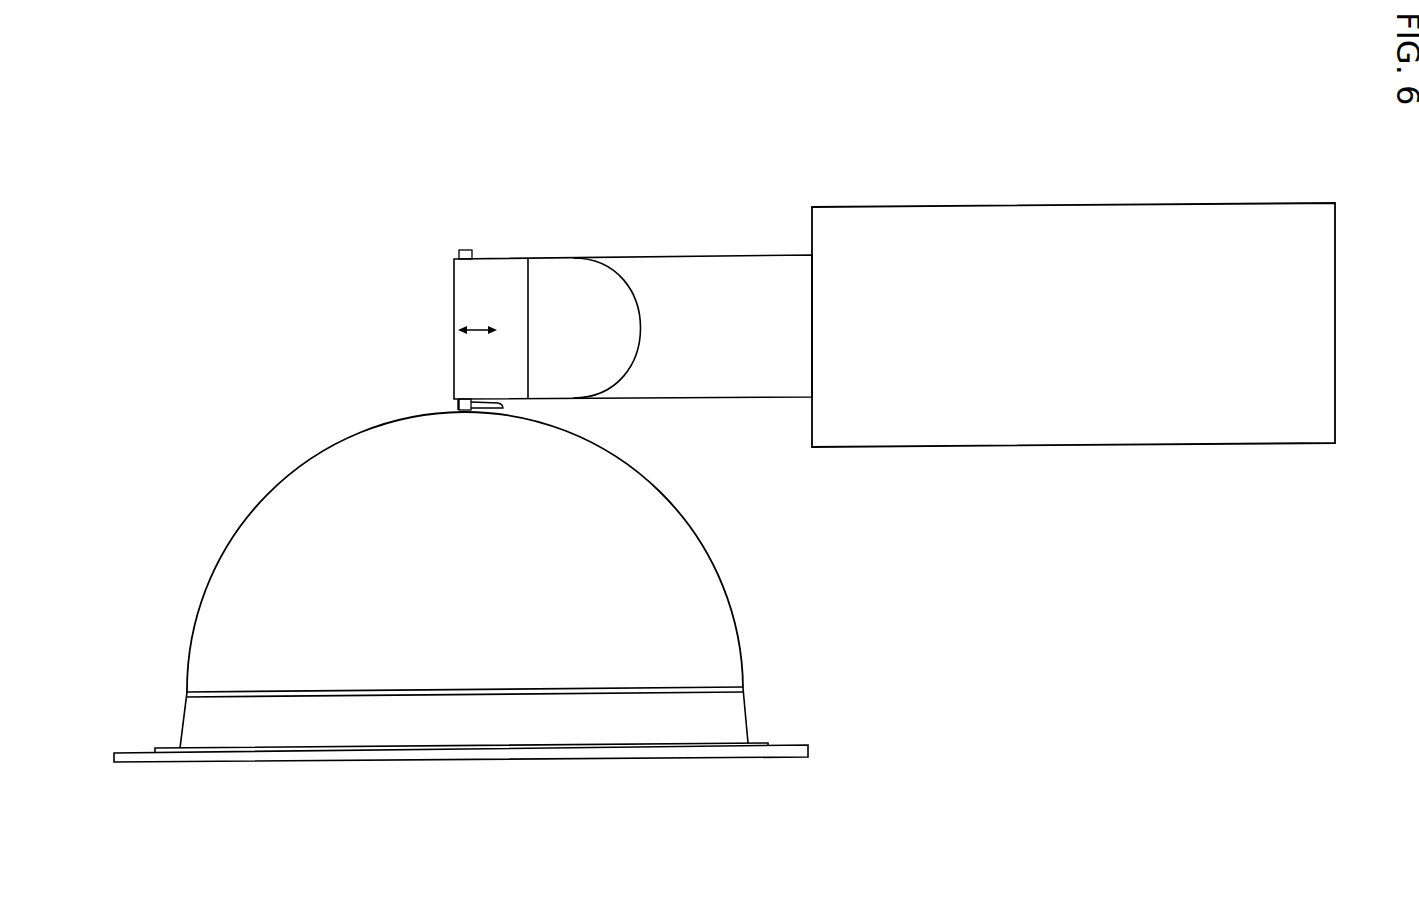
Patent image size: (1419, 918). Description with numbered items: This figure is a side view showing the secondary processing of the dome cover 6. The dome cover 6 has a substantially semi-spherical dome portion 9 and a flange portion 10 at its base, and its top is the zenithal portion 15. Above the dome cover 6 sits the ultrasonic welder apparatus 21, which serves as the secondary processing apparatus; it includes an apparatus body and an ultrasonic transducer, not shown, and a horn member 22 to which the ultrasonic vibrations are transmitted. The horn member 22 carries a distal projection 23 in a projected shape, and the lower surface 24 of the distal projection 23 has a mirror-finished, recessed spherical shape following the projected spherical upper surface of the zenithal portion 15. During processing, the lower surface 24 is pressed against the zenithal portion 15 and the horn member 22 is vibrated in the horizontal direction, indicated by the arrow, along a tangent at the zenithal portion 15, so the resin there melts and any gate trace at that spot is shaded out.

The dome cover 6 is at (250, 498).
The dome portion 9 is at (688, 545).
The flange portion 10 is at (795, 745).
The zenithal portion 15 is at (455, 408).
The ultrasonic welder apparatus 21 is at (1078, 204).
The horn member 22 is at (528, 258).
The distal projection 23 is at (500, 408).
The lower surface 24 is at (465, 413).